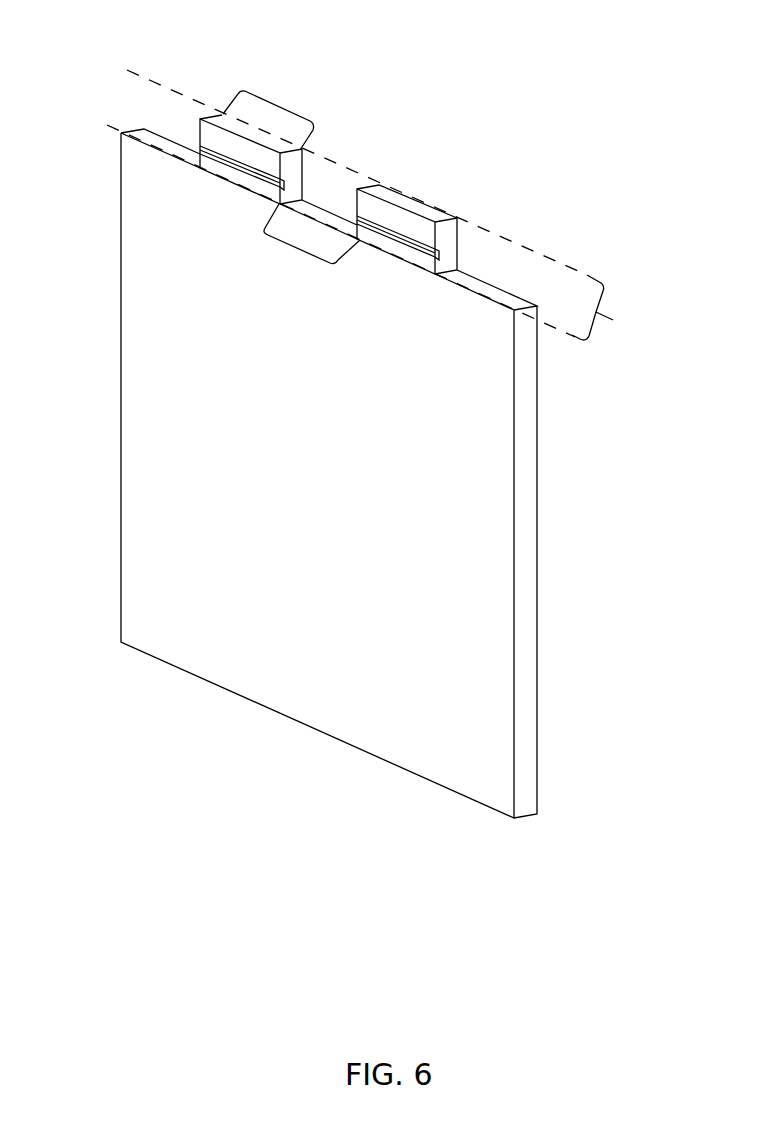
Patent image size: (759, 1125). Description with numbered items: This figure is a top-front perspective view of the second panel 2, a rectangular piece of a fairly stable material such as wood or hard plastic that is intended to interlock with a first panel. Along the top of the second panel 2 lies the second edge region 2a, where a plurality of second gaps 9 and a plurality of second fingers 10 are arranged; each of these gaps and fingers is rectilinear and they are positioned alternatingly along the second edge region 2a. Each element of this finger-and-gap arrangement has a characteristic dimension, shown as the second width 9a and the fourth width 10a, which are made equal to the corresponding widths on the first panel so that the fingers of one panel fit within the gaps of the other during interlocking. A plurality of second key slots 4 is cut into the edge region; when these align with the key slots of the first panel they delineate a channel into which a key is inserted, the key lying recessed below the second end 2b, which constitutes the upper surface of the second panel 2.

The second panel 2 is at (523, 620).
The second edge region 2a is at (613, 320).
The second end 2b is at (147, 517).
The second key slots 4 is at (266, 172).
The second gaps 9 is at (216, 119).
The second width 9a is at (278, 106).
The second fingers 10 is at (323, 197).
The fourth width 10a is at (302, 250).